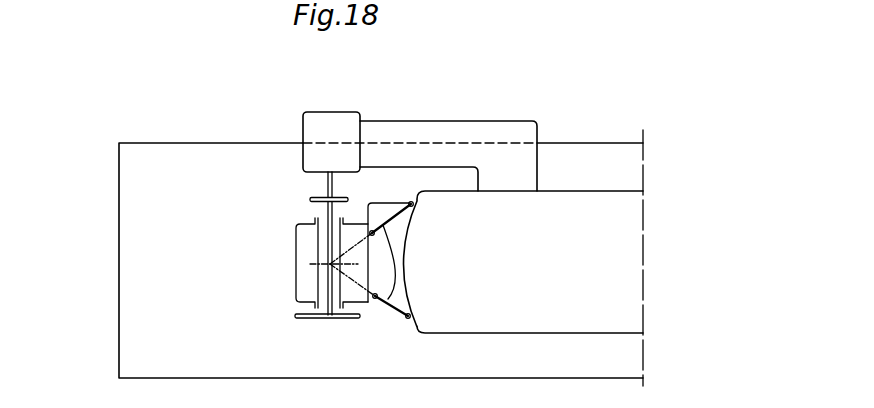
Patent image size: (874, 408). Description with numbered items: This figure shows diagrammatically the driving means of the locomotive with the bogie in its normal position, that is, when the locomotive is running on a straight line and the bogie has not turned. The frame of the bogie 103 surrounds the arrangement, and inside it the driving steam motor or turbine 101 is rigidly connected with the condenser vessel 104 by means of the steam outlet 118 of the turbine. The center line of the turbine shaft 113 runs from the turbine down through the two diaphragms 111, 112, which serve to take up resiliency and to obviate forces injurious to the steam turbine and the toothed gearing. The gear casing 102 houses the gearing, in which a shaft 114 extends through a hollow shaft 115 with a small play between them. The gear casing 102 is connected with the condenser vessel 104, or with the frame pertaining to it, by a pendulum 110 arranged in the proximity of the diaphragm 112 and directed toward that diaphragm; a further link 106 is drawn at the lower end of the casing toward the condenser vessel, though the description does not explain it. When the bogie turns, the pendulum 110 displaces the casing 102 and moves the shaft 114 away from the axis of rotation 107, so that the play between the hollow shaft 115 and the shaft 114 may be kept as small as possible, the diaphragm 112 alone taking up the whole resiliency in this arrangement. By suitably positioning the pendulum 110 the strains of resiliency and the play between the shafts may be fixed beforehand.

The driving steam motor 101 is at (338, 122).
The gear casing 102 is at (296, 253).
The frame of the bogie 103 is at (208, 152).
The condenser vessel 104 is at (524, 262).
The link 106 is at (388, 299).
The axis of rotation 107 is at (333, 265).
The pendulum 110 is at (392, 203).
The diaphragm 111 is at (313, 320).
The diaphragm 112 is at (350, 199).
The center line of the turbine shaft 113 is at (327, 182).
The shaft 114 is at (327, 207).
The hollow shaft 115 is at (318, 278).
The steam outlet 118 is at (458, 128).